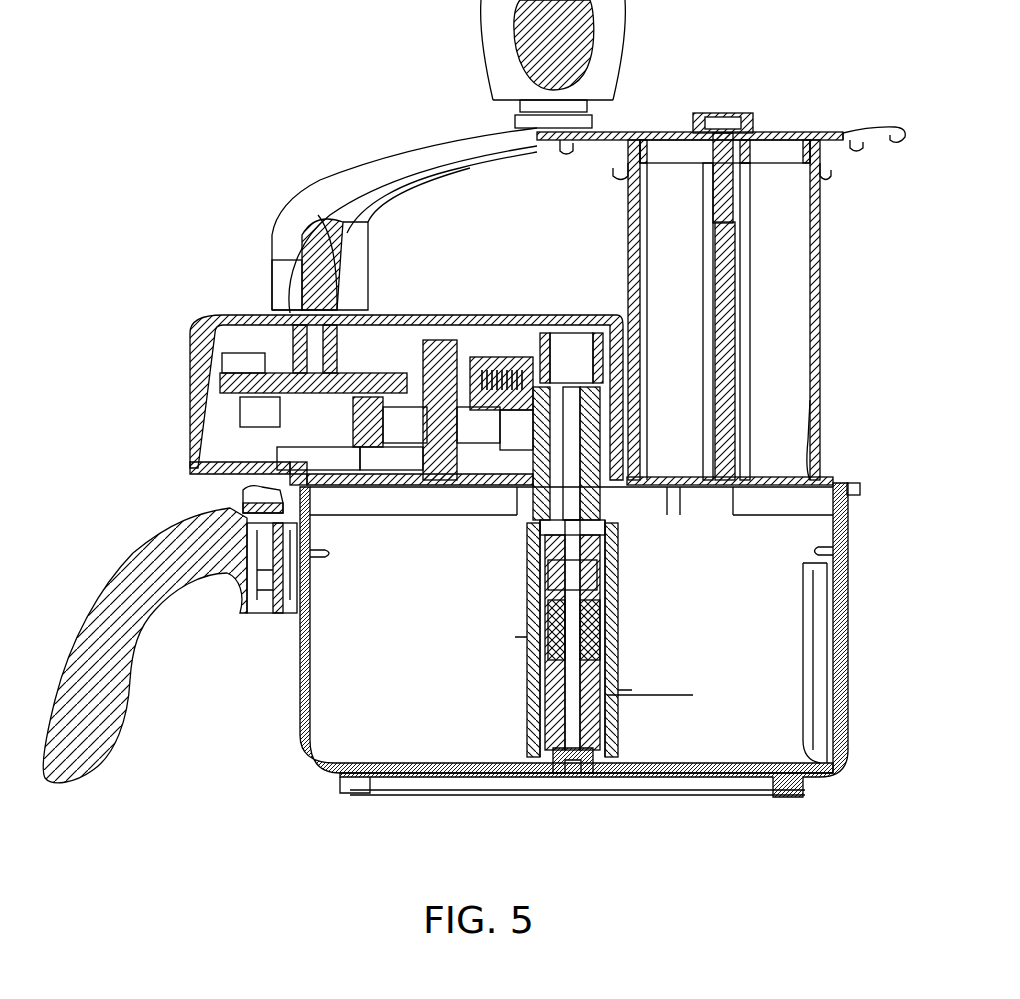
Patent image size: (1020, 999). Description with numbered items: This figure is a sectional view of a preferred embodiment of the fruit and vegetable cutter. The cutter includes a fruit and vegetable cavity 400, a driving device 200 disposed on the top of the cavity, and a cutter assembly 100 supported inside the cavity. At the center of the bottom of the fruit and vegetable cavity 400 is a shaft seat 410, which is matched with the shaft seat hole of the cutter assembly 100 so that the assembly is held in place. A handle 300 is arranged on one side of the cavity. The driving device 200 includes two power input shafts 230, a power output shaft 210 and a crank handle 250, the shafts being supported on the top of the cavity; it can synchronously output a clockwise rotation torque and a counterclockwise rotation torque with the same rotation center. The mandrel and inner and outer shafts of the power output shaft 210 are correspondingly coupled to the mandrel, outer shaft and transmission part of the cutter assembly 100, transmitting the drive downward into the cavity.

The cutter assembly 100 is at (613, 680).
The driving device 200 is at (380, 320).
The power output shaft 210 is at (787, 478).
The power input shafts 230 is at (290, 377).
The crank handle 250 is at (403, 160).
The handle 300 is at (120, 583).
The fruit and vegetable cavity 400 is at (437, 693).
The shaft seat 410 is at (540, 767).